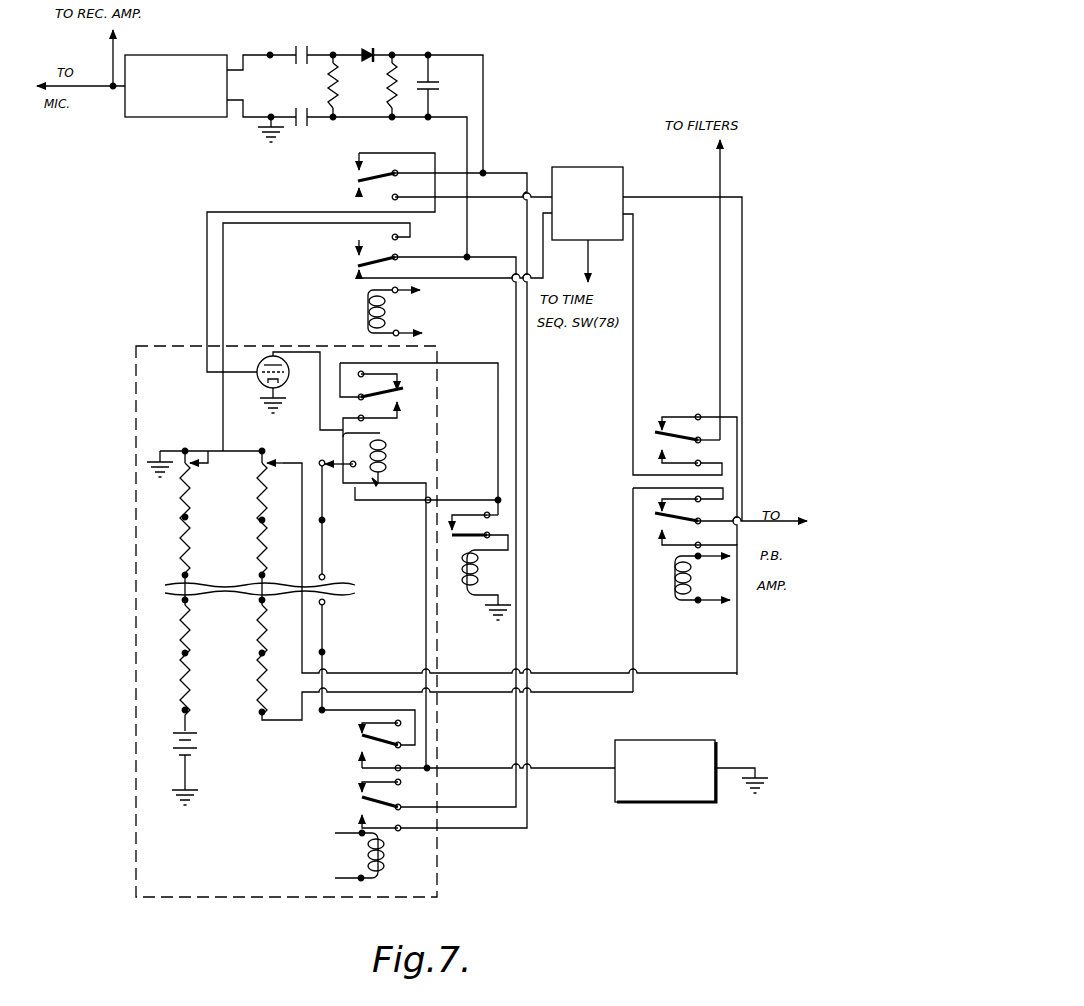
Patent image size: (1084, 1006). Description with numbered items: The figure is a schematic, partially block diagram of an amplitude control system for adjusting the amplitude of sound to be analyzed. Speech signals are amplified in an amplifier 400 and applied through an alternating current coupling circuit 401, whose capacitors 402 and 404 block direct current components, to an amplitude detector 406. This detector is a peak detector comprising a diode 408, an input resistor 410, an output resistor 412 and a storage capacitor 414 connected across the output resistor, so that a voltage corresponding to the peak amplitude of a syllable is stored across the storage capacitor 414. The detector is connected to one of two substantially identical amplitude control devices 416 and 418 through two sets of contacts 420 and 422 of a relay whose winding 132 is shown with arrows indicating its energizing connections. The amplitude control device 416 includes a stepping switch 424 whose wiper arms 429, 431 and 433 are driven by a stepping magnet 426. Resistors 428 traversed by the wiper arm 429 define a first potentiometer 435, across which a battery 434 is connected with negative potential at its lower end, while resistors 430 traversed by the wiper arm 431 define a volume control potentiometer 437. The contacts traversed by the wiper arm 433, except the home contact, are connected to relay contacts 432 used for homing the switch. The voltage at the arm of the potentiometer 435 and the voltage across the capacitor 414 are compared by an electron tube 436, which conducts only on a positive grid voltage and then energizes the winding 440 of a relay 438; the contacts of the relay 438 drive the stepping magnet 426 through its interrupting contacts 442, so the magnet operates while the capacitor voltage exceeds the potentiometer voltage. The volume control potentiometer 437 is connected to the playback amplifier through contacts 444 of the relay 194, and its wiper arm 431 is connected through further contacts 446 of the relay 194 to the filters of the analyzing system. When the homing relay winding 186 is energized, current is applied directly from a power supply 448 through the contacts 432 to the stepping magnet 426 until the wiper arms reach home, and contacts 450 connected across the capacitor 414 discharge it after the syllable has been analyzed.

The amplifier 400 is at (165, 55).
The alternating current coupling circuit 401 is at (291, 106).
The capacitor 402 is at (300, 47).
The capacitor 404 is at (298, 123).
The amplitude detector 406 is at (368, 47).
The diode 408 is at (376, 52).
The input resistor 410 is at (332, 85).
The output resistor 412 is at (388, 92).
The storage capacitor 414 is at (442, 80).
The amplitude control device 416 is at (172, 345).
The amplitude control device 418 is at (561, 158).
The relay contacts 420 is at (355, 190).
The relay contacts 422 is at (352, 266).
The relay winding 132 is at (388, 314).
The electron tube 436 is at (266, 387).
The relay 438 is at (386, 438).
The relay winding 440 is at (386, 450).
The wiper arm 433 is at (338, 460).
The wiper arm 431 is at (283, 461).
The wiper arm 429 is at (209, 466).
The resistors 428 is at (182, 492).
The resistors 430 is at (268, 480).
The stepping switch 424 is at (172, 562).
The first potentiometer 435 is at (182, 612).
The volume control potentiometer 437 is at (260, 626).
The battery 434 is at (205, 757).
The interrupting contacts 442 is at (461, 524).
The stepping magnet 426 is at (464, 557).
The relay contacts 432 is at (356, 759).
The contacts 450 is at (356, 824).
The homing relay winding 186 is at (368, 870).
The relay contacts 446 is at (660, 456).
The relay contacts 444 is at (660, 540).
The relay 194 is at (702, 578).
The power supply 448 is at (700, 739).